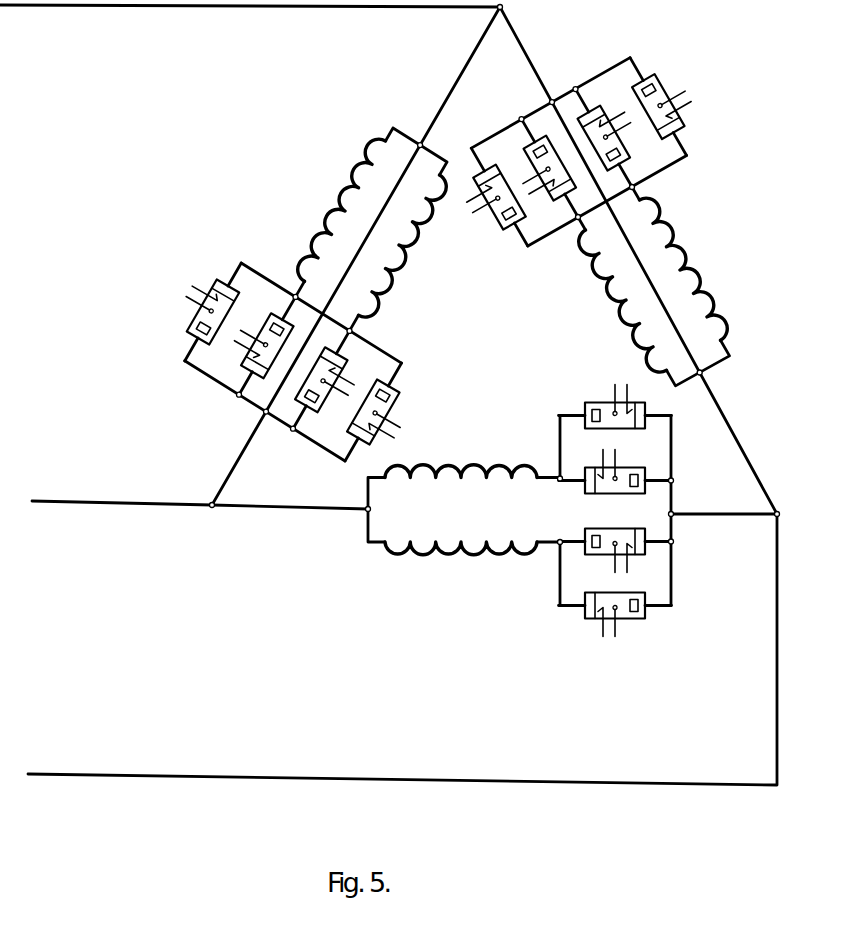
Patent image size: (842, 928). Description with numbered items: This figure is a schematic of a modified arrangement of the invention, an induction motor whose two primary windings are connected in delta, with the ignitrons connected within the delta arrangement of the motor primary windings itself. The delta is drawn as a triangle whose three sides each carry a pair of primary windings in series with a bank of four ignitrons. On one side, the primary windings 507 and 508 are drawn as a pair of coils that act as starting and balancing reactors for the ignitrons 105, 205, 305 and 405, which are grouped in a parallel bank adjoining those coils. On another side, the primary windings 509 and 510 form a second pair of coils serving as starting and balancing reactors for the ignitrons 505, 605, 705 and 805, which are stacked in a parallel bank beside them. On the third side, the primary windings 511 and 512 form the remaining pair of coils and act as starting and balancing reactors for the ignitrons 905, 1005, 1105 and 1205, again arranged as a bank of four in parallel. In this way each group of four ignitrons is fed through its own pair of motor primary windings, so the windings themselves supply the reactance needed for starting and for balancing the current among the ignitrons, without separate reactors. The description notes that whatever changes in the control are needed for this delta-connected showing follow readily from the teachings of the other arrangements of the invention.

The ignitron 105 is at (197, 313).
The ignitron 205 is at (292, 334).
The ignitron 305 is at (333, 384).
The ignitron 405 is at (400, 389).
The ignitron 505 is at (643, 617).
The ignitron 605 is at (628, 555).
The ignitron 705 is at (613, 493).
The ignitron 805 is at (623, 428).
The ignitron 905 is at (687, 127).
The ignitron 1005 is at (628, 153).
The ignitron 1105 is at (573, 187).
The ignitron 1205 is at (521, 209).
The primary winding 507 is at (404, 258).
The primary winding 508 is at (324, 215).
The primary winding 509 is at (457, 465).
The primary winding 510 is at (448, 555).
The primary winding 511 is at (684, 254).
The primary winding 512 is at (610, 298).